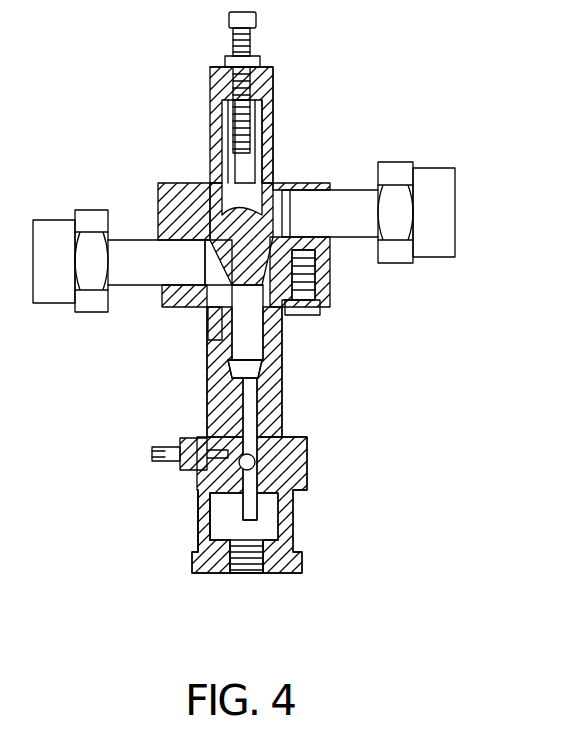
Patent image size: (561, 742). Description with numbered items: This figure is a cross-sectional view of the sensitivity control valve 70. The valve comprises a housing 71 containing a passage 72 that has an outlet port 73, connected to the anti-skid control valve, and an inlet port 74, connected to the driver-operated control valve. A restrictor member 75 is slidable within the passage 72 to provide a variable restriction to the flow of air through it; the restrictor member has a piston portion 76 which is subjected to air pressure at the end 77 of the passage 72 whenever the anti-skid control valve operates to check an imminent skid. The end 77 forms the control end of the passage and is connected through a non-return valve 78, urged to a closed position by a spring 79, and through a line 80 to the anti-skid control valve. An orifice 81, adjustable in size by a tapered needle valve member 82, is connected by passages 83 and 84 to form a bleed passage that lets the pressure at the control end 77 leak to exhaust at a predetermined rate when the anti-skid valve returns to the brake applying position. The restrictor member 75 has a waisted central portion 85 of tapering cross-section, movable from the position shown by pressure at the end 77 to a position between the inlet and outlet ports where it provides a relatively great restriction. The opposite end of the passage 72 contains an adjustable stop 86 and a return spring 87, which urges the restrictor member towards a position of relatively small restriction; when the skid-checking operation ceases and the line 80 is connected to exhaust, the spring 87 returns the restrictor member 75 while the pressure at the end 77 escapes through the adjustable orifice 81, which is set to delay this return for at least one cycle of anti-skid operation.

The sensitivity control valve 70 is at (290, 390).
The housing 71 is at (290, 316).
The passage 72 is at (328, 240).
The outlet port 73 is at (145, 257).
The inlet port 74 is at (368, 205).
The restrictor member 75 is at (207, 335).
The piston portion 76 is at (217, 316).
The end of the passage 77 is at (243, 348).
The non-return valve 78 is at (255, 462).
The spring 79 is at (300, 437).
The line 80 is at (296, 515).
The orifice 81 is at (223, 467).
The tapered needle valve member 82 is at (195, 442).
The passage 83 is at (195, 490).
The passage 84 is at (213, 517).
The waisted central portion 85 is at (205, 182).
The adjustable stop 86 is at (268, 82).
The return spring 87 is at (225, 128).